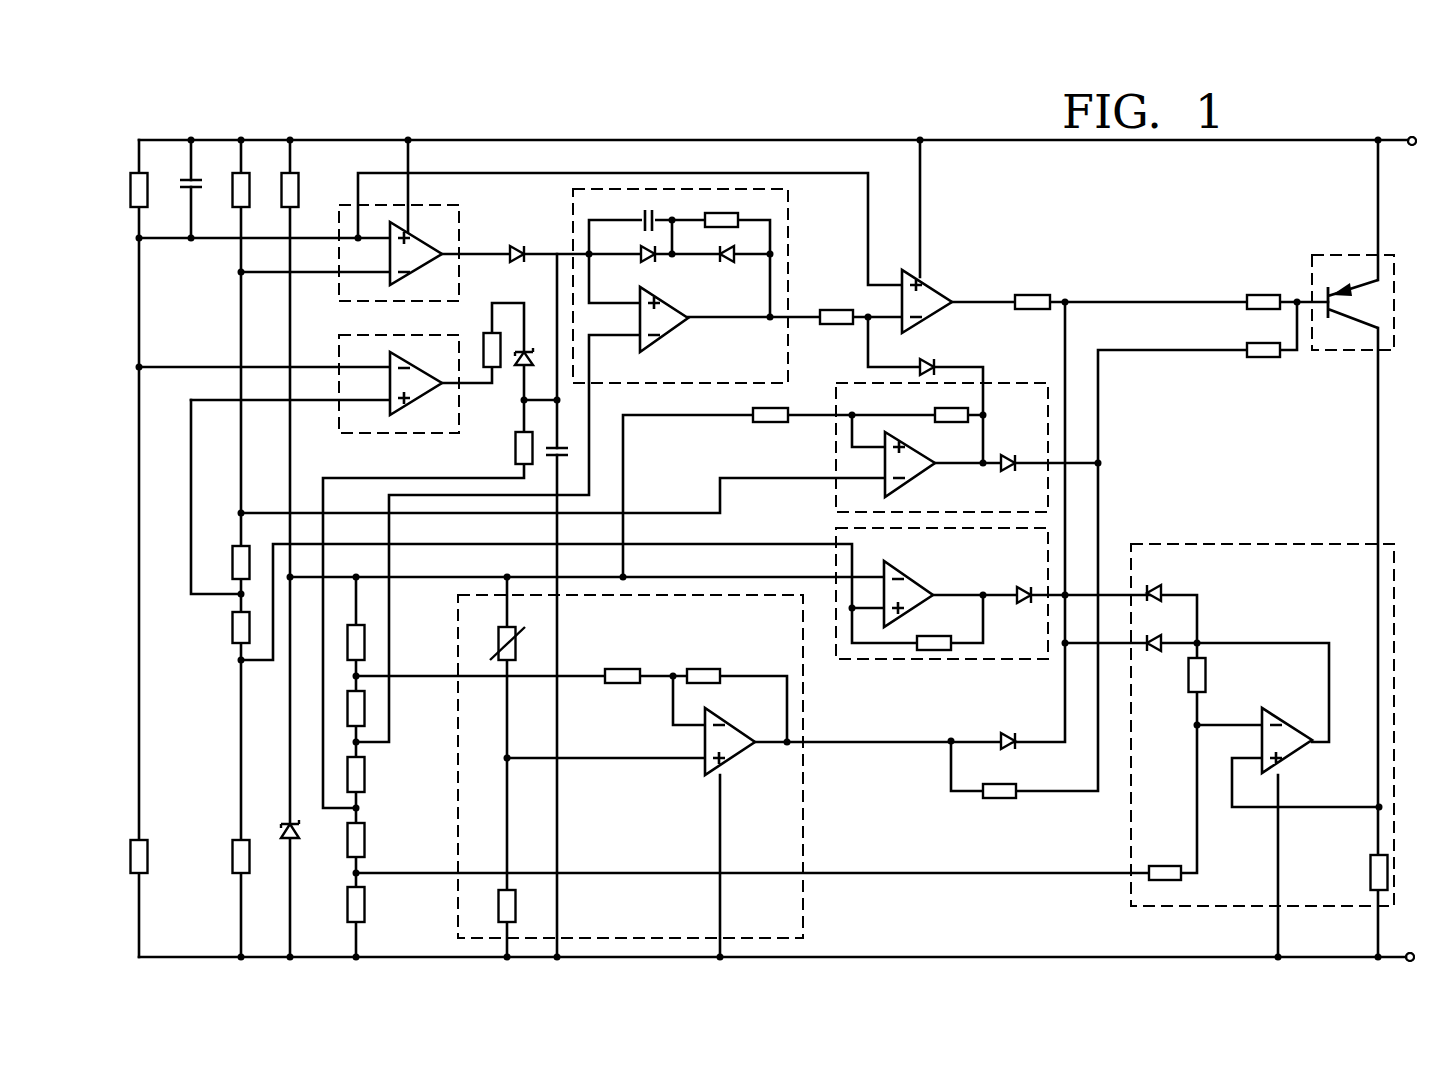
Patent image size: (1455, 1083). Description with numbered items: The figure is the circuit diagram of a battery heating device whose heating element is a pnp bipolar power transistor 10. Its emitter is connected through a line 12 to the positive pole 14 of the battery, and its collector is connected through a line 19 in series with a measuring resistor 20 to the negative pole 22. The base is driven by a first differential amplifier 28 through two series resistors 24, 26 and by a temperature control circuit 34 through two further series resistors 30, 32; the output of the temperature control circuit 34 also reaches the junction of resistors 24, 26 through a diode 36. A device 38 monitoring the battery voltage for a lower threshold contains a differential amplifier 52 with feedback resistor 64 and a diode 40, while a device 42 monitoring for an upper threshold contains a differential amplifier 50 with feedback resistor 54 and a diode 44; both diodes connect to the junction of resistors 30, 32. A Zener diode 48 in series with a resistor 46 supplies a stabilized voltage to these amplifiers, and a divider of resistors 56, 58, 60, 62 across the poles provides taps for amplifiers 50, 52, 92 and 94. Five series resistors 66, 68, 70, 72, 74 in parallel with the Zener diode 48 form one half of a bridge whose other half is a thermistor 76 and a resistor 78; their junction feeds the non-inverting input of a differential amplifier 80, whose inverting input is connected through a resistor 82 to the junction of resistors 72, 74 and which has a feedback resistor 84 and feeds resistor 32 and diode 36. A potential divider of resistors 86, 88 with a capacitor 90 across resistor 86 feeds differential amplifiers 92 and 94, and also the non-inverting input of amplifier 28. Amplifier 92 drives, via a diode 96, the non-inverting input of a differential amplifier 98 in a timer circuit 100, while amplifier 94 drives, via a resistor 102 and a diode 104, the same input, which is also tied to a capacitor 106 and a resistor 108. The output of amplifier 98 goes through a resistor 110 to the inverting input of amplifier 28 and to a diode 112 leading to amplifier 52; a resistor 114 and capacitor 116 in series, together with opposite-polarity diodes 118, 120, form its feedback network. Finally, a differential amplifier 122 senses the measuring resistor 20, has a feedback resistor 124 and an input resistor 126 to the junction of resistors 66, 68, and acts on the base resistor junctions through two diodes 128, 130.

The bipolar power transistor 10 is at (1327, 262).
The line 12 is at (1376, 183).
The positive pole 14 is at (1414, 146).
The line 19 is at (1382, 522).
The measuring resistor 20 is at (1371, 878).
The negative pole 22 is at (1410, 953).
The resistor 24 is at (1253, 294).
The resistor 26 is at (1030, 294).
The first differential amplifier 28 is at (937, 297).
The resistor 30 is at (1262, 358).
The resistor 32 is at (1004, 799).
The temperature control circuit 34 is at (773, 838).
The diode 36 is at (1012, 731).
The device for monitoring the battery voltage for a lower threshold value 38 is at (1010, 387).
The diode 40 is at (1007, 455).
The device for monitoring the battery voltage for an upper threshold value 42 is at (1003, 649).
The diode 44 is at (1027, 585).
The resistor 46 is at (297, 185).
The Zener diode 48 is at (297, 836).
The differential amplifier 50 is at (900, 566).
The differential amplifier 52 is at (913, 473).
The feedback resistor 54 is at (921, 634).
The resistor 56 is at (232, 845).
The resistor 58 is at (232, 622).
The resistor 60 is at (232, 558).
The resistor 62 is at (248, 185).
The resistor 64 is at (953, 425).
The resistor 66 is at (364, 906).
The resistor 68 is at (364, 844).
The resistor 70 is at (364, 771).
The resistor 72 is at (364, 707).
The resistor 74 is at (364, 641).
The thermistor 76 is at (498, 626).
The resistor 78 is at (515, 908).
The differential amplifier 80 is at (733, 750).
The resistor 82 is at (627, 667).
The feed-back resistor 84 is at (707, 667).
The resistor 86 is at (150, 185).
The resistor 88 is at (150, 843).
The capacitor 90 is at (198, 183).
The differential amplifier 92 is at (388, 248).
The differential amplifier 94 is at (388, 357).
The diode 96 is at (516, 243).
The differential amplifier 98 is at (676, 326).
The timer circuit 100 is at (766, 368).
The resistor 102 is at (485, 335).
The diode 104 is at (528, 352).
The capacitor 106 is at (564, 450).
The resistor 108 is at (516, 442).
The resistor 110 is at (838, 310).
The diode 112 is at (923, 360).
The resistor 114 is at (713, 212).
The capacitor 116 is at (645, 213).
The diode 118 is at (650, 262).
The diode 120 is at (725, 262).
The differential amplifier 122 is at (1290, 724).
The feed-back resistor 124 is at (1208, 671).
The resistor 126 is at (1160, 866).
The diode 128 is at (1165, 636).
The diode 130 is at (1163, 578).